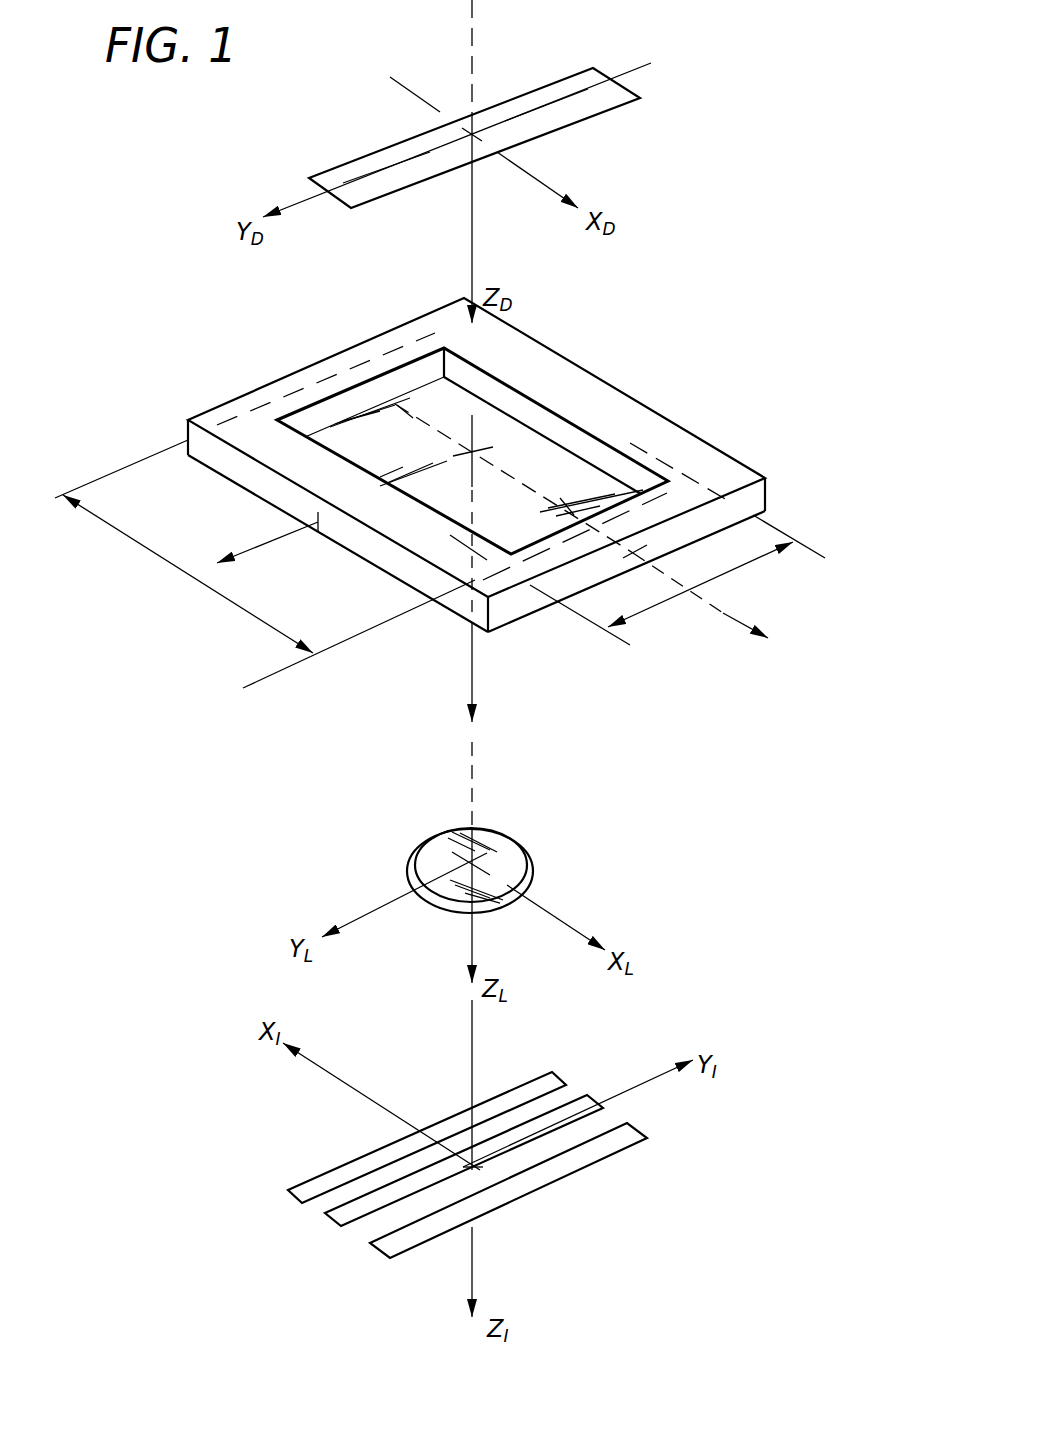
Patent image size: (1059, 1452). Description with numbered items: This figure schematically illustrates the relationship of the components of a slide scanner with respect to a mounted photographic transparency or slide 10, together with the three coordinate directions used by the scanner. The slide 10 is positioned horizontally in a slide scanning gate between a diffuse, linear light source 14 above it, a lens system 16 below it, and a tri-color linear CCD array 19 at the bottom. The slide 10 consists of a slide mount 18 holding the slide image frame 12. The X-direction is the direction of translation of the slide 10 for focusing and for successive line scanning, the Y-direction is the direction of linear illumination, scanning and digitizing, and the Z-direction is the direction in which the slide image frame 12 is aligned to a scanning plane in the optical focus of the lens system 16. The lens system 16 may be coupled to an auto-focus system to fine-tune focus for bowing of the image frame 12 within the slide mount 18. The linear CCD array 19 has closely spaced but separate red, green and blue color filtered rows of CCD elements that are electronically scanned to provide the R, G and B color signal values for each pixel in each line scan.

The slide 10 is at (468, 514).
The slide image frame 12 is at (562, 463).
The linear light source 14 is at (518, 97).
The lens system 16 is at (515, 846).
The slide mount 18 is at (677, 438).
The tri-color linear CCD array 19 is at (605, 1180).